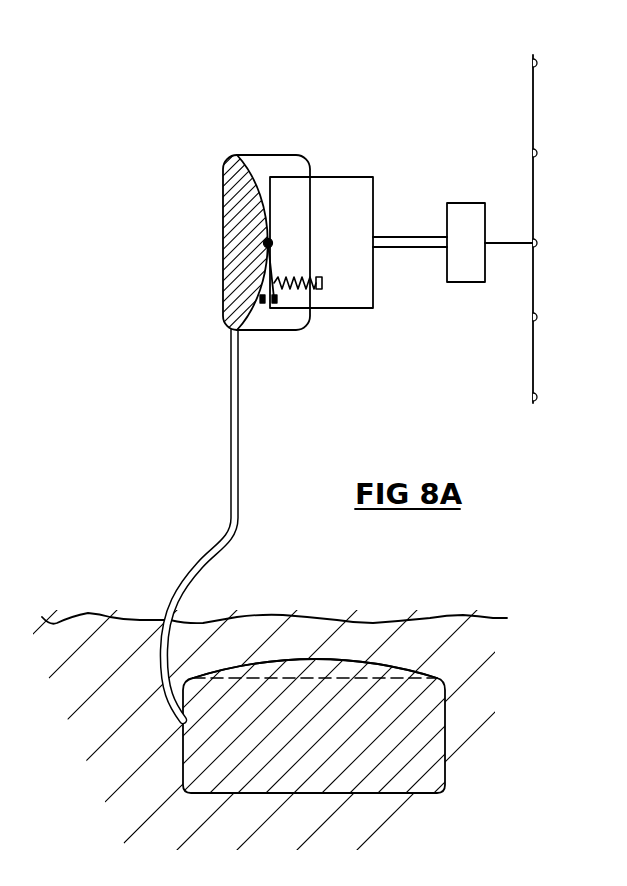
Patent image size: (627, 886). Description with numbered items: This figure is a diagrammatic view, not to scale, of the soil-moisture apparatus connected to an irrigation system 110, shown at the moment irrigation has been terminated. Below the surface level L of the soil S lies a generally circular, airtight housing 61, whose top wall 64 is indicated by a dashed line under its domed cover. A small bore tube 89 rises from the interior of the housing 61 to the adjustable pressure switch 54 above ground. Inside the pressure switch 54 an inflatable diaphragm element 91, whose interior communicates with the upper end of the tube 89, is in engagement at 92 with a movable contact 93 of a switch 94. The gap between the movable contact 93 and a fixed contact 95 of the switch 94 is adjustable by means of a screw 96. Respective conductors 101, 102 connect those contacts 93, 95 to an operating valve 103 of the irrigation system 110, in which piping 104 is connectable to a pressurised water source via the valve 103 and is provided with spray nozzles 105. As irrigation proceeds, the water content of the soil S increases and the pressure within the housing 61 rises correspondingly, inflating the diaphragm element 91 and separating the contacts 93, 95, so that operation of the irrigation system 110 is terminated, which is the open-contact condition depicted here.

The adjustable pressure switch 54 is at (215, 218).
The airtight housing 61 is at (313, 737).
The top wall 64 is at (307, 652).
The small bore tube 89 is at (231, 503).
The inflatable diaphragm element 91 is at (242, 262).
The engagement point 92 is at (272, 243).
The movable contact 93 is at (236, 300).
The switch 94 is at (275, 305).
The fixed contact 95 is at (263, 305).
The screw 96 is at (322, 283).
The conductor 101 is at (355, 177).
The conductor 102 is at (373, 285).
The operating valve 103 is at (469, 274).
The piping 104 is at (533, 277).
The spray nozzles 105 is at (537, 64).
The irrigation system 110 is at (542, 222).
The surface level L is at (92, 617).
The soil S is at (470, 618).